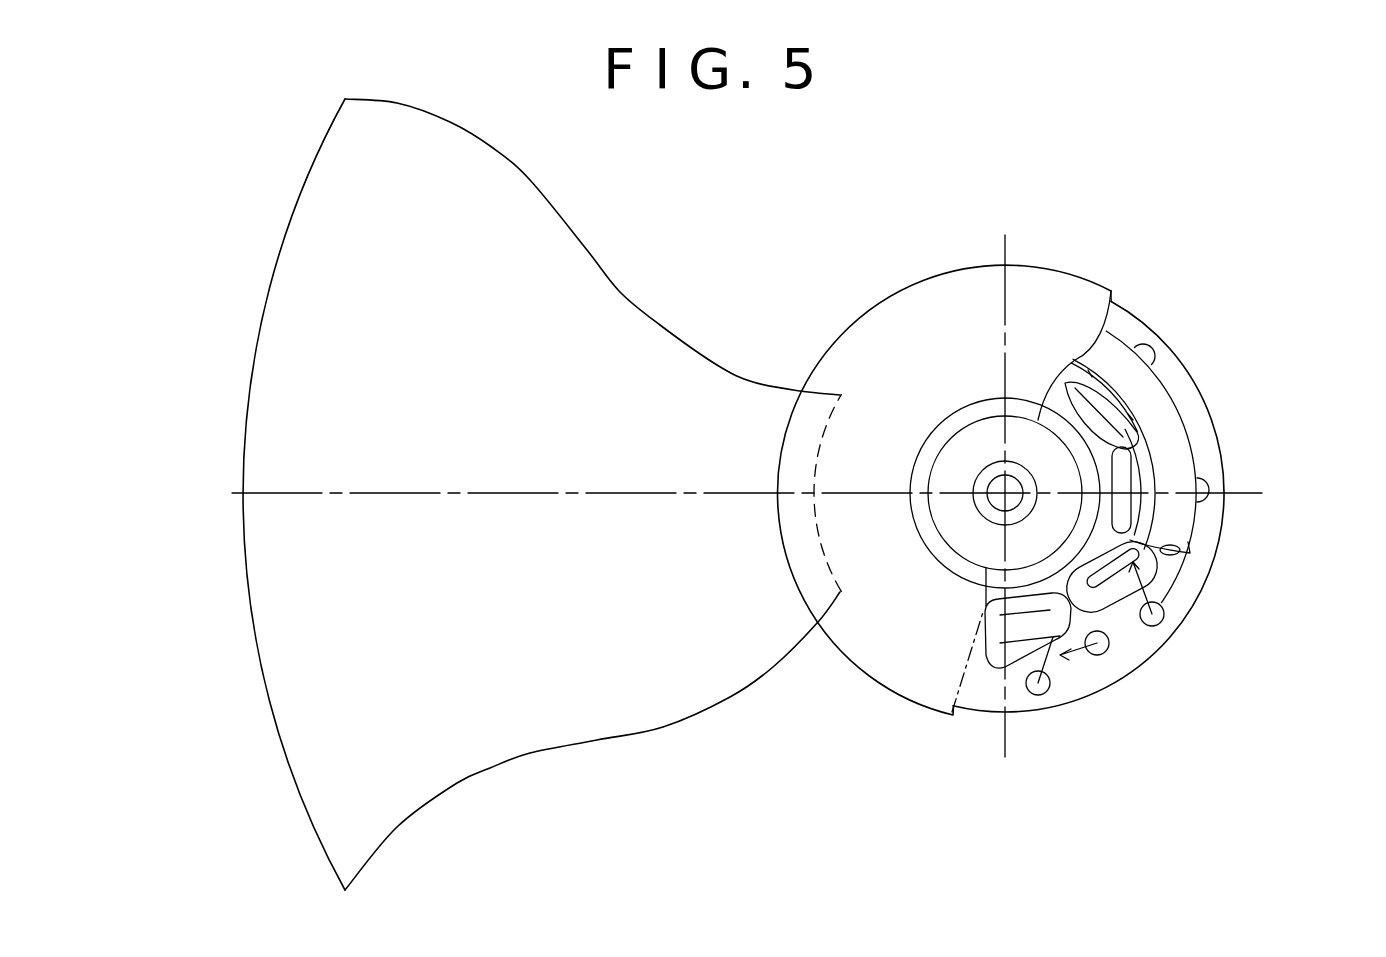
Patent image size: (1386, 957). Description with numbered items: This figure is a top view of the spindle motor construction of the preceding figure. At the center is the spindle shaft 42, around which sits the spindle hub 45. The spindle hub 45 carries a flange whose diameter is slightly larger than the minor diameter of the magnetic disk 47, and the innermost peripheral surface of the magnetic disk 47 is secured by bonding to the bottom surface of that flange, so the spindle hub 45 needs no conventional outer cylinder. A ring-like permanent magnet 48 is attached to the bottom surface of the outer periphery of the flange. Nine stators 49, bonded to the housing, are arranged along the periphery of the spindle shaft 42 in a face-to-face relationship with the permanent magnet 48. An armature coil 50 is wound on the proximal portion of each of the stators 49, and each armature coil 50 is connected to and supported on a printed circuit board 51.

The spindle shaft 42 is at (1028, 505).
The spindle hub 45 is at (903, 607).
The magnetic disk 47 is at (515, 667).
The permanent magnet 48 is at (1177, 453).
The stators 49 is at (1017, 633).
The armature coil 50 is at (1062, 640).
The printed circuit board 51 is at (1178, 593).